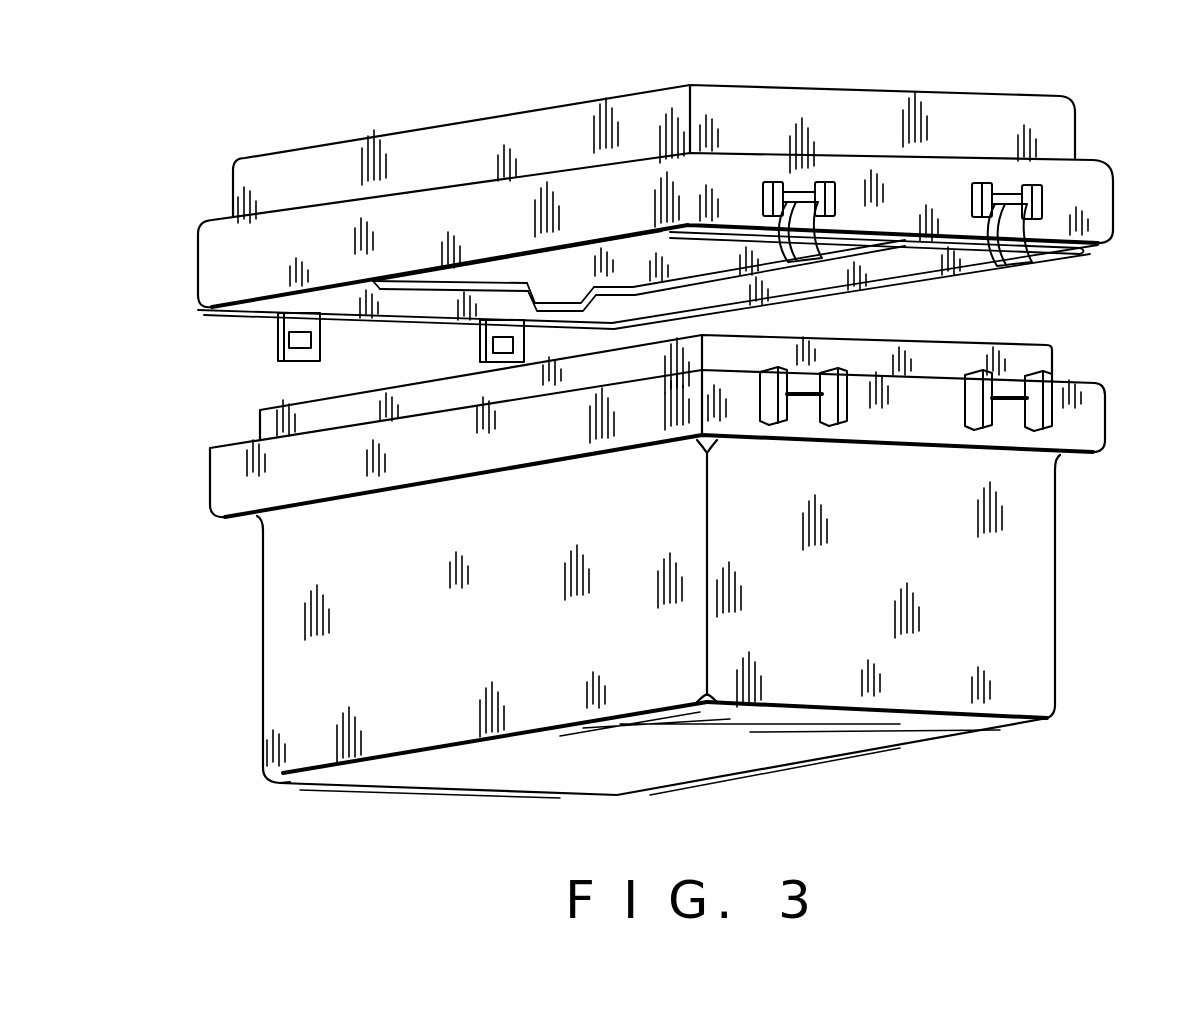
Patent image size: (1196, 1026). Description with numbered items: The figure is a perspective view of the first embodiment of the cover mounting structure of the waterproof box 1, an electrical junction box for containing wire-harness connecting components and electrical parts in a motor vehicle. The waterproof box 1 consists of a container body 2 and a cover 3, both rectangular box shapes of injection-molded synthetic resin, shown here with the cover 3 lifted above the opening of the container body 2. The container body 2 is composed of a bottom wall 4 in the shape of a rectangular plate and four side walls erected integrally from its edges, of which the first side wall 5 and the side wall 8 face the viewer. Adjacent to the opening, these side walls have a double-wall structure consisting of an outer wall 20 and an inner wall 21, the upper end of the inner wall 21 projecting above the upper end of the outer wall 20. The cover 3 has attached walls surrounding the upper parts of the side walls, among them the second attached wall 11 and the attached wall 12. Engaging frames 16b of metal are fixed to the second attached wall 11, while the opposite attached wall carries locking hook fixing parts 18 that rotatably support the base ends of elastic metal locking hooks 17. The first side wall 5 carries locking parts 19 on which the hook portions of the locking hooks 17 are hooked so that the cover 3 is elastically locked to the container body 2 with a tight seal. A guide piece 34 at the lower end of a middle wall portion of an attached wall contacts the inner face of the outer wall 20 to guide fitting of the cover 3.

The waterproof box 1 is at (882, 67).
The container body 2 is at (1062, 657).
The cover 3 is at (1000, 85).
The bottom wall 4 is at (787, 743).
The first side wall 5 is at (1027, 548).
The side wall 8 is at (285, 582).
The second attached wall 11 is at (262, 313).
The attached wall 12 is at (923, 277).
The engaging frame 16b is at (480, 344).
The locking hook 17 is at (1040, 252).
The locking hook fixing part 18 is at (1040, 200).
The locking part 19 is at (1010, 402).
The outer wall 20 is at (232, 485).
The inner wall 21 is at (263, 420).
The guide piece 34 is at (660, 298).